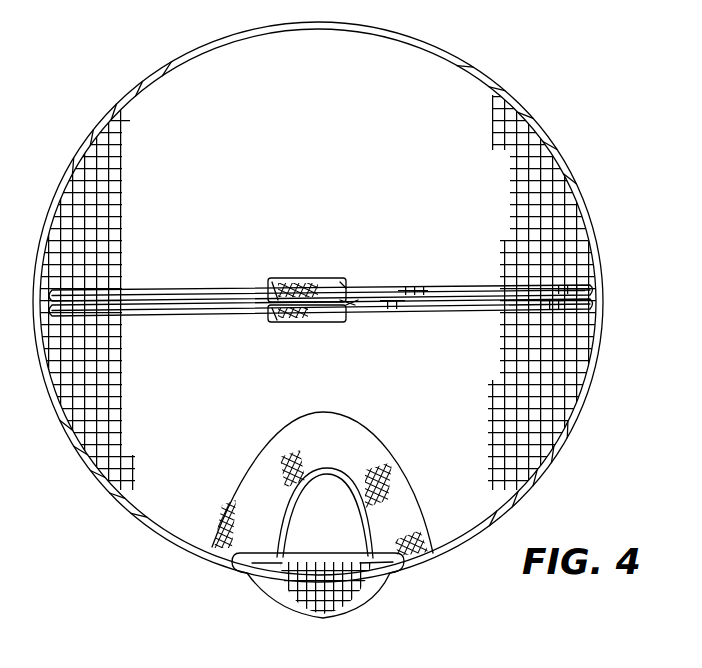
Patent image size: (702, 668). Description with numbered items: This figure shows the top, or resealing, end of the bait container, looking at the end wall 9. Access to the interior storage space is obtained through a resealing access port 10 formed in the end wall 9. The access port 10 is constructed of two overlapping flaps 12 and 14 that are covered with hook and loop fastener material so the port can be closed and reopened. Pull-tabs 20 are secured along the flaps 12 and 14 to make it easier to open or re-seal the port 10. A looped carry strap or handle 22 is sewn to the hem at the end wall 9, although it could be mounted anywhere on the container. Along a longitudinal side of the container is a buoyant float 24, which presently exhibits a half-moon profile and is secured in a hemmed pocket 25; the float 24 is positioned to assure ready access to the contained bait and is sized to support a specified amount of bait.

The end wall 9 is at (447, 87).
The resealing access port 10 is at (372, 276).
The overlapping flap 12 is at (470, 313).
The overlapping flap 14 is at (410, 290).
The pull-tabs 20 is at (272, 298).
The carry strap or handle 22 is at (258, 462).
The buoyant float 24 is at (275, 585).
The hemmed pocket 25 is at (295, 615).